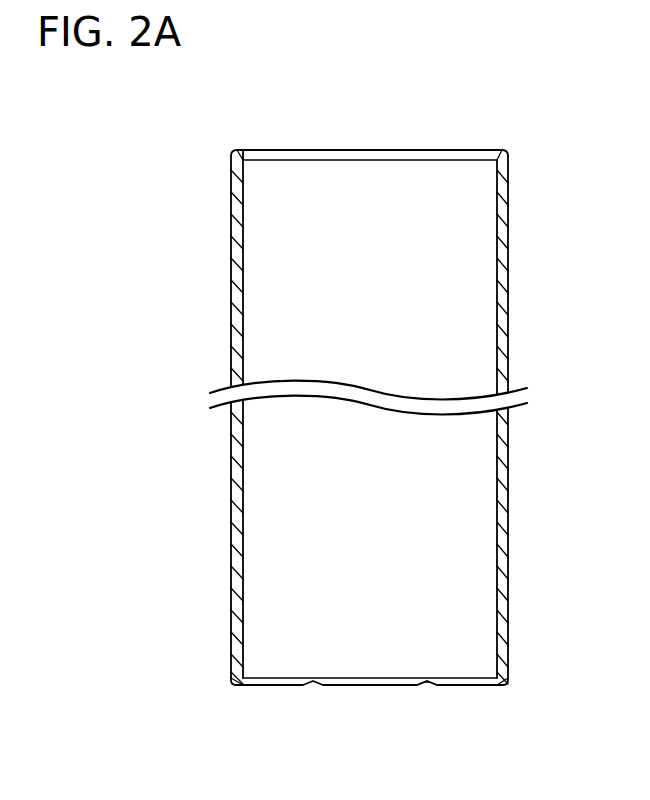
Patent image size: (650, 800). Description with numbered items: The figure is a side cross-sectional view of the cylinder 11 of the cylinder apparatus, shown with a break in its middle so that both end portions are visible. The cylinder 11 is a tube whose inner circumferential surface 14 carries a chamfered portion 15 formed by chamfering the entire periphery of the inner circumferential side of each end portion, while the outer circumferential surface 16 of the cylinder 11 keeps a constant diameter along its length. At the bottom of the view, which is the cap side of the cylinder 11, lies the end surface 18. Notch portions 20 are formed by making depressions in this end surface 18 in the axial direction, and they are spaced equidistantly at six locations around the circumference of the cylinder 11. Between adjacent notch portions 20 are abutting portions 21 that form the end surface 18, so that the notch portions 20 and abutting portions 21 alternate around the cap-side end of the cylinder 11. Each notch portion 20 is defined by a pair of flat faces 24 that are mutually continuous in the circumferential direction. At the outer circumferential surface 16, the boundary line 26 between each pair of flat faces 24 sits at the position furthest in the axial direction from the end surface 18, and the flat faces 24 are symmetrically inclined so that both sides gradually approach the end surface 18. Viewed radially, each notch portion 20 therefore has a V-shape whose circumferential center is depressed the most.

The cylinder 11 is at (528, 206).
The inner circumferential surface 14 is at (498, 456).
The chamfered portion 15 is at (378, 155).
The outer circumferential surface 16 is at (509, 537).
The end surface 18 is at (275, 686).
The notch portion 20 is at (235, 683).
The abutting portion 21 is at (255, 686).
The flat face 24 is at (423, 686).
The boundary line 26 is at (427, 686).